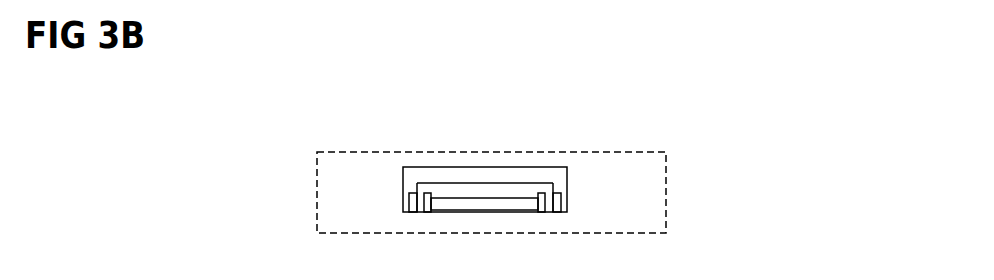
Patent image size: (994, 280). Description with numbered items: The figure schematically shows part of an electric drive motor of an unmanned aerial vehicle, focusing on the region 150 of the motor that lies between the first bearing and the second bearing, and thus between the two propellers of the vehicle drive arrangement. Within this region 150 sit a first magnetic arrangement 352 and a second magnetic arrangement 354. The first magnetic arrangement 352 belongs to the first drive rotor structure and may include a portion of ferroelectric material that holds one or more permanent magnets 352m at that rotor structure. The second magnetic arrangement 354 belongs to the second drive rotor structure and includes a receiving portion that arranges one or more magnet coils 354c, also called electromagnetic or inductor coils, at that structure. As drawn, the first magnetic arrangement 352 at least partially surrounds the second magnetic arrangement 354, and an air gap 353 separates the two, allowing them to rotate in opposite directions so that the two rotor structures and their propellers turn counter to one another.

The region 150 is at (664, 152).
The first magnetic arrangement 352 is at (499, 176).
The permanent magnets 352m is at (411, 194).
The air gap 353 is at (416, 196).
The second magnetic arrangement 354 is at (500, 210).
The magnet coils 354c is at (425, 208).